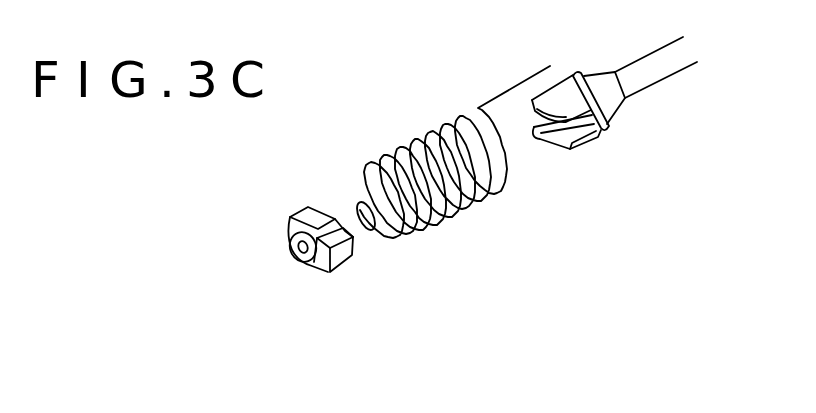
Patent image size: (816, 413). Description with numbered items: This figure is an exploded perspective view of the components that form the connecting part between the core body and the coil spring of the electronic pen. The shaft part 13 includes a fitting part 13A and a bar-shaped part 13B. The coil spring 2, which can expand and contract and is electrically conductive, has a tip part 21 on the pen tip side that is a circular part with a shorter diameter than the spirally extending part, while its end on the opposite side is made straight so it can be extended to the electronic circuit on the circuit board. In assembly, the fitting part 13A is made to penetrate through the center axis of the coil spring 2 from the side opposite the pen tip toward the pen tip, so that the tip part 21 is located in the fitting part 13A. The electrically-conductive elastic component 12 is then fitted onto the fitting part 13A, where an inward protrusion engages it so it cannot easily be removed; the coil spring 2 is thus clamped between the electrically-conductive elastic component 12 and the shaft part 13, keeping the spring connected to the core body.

The coil spring 2 is at (463, 210).
The electrically-conductive elastic component 12 is at (339, 261).
The shaft part 13 is at (614, 147).
The fitting part 13A is at (579, 124).
The bar-shaped part 13B is at (638, 80).
The tip part 21 is at (372, 236).